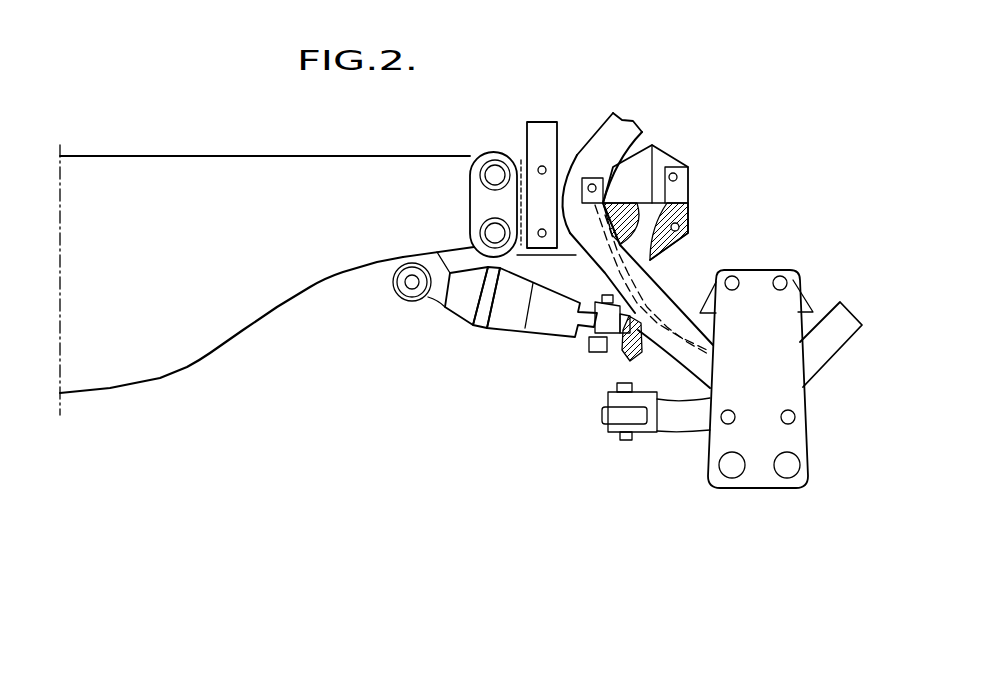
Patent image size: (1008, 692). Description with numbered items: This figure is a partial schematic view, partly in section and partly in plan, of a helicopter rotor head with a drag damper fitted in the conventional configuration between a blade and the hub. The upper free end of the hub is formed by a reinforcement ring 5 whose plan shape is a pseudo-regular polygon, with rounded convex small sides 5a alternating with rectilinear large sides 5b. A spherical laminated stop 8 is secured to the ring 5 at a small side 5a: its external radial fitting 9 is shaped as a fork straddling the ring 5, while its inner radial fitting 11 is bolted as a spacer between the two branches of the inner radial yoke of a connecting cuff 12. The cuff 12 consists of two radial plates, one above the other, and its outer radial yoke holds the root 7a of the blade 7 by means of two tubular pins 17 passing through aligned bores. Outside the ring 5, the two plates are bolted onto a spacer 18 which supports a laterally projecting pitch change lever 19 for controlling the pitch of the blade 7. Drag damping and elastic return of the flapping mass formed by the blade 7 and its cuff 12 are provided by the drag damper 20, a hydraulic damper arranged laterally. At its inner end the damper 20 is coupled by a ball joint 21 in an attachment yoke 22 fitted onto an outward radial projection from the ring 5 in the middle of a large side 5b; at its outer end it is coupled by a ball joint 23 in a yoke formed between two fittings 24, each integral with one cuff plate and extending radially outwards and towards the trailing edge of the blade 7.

The reinforcement ring 5 is at (643, 117).
The small sides 5a is at (575, 178).
The large sides 5b is at (663, 300).
The blade 7 is at (165, 182).
The blade root 7a is at (457, 180).
The spherical laminated stop 8 is at (692, 167).
The external radial fitting 9 is at (623, 213).
The inner radial fitting 11 is at (683, 207).
The connecting cuff 12 is at (522, 143).
The tubular pins 17 is at (494, 176).
The spacer 18 is at (555, 242).
The pitch change lever 19 is at (542, 128).
The drag damper 20 is at (500, 335).
The ball joint 21 is at (593, 336).
The attachment yoke 22 is at (598, 350).
The ball joint 23 is at (409, 292).
The fittings 24 is at (400, 272).